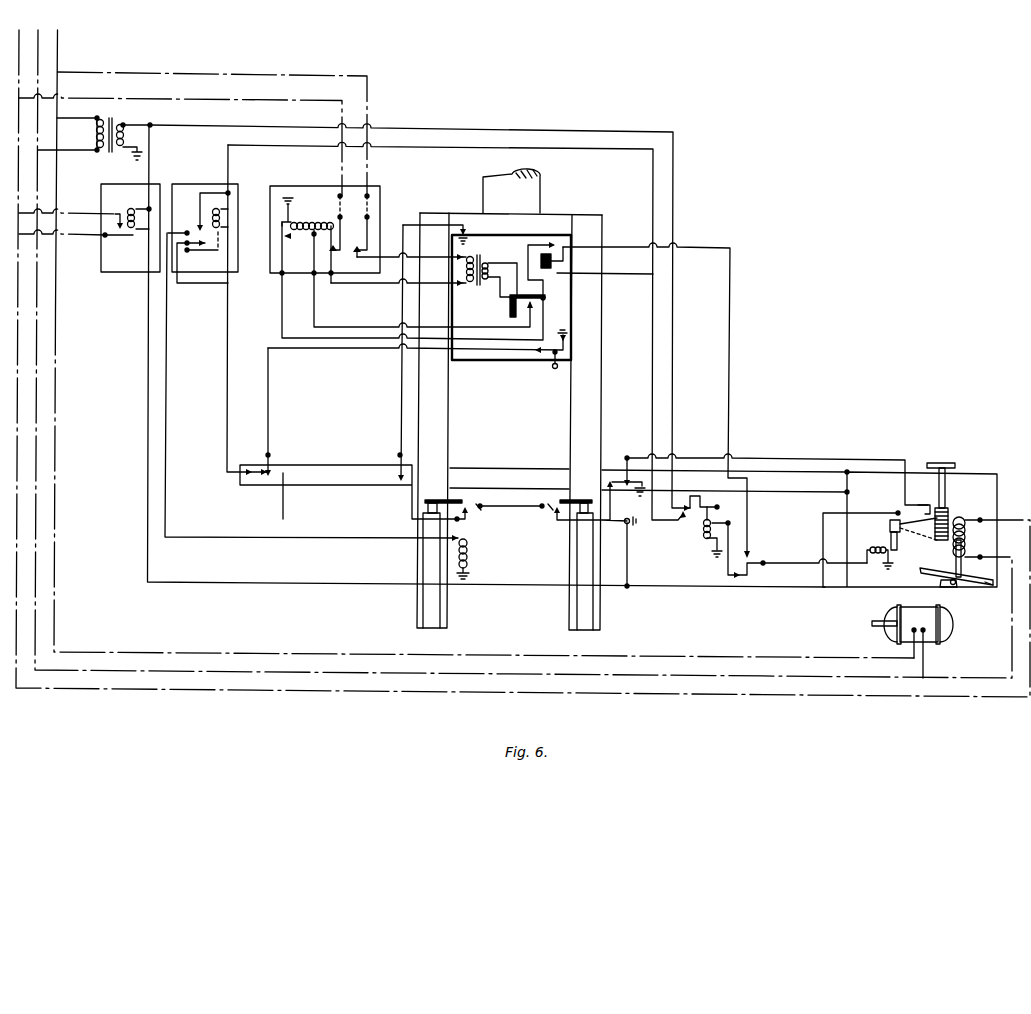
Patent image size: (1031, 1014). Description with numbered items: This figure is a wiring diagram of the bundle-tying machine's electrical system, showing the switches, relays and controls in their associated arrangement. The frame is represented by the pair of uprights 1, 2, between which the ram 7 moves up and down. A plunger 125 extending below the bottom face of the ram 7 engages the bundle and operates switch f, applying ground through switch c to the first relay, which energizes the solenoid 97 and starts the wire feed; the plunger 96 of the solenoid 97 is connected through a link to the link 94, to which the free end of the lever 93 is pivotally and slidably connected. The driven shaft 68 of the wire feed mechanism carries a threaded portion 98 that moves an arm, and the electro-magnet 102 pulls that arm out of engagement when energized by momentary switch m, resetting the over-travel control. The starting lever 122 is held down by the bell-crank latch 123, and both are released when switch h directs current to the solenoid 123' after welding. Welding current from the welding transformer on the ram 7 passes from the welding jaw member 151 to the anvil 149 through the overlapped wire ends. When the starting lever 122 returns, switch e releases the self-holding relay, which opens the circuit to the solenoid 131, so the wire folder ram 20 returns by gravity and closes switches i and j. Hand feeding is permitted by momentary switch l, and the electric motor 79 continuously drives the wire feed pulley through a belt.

The upright 1 is at (451, 442).
The upright 2 is at (570, 431).
The ram 7 is at (494, 361).
The wire folder ram 20 is at (423, 506).
The driven shaft 68 is at (946, 488).
The electric motor 79 is at (893, 633).
The lever 93 is at (945, 586).
The link 94 is at (982, 586).
The plunger 96 is at (956, 566).
The solenoid 97 is at (965, 542).
The threaded portion 98 is at (948, 512).
The electro-magnet 102 is at (877, 548).
The starting lever 122 is at (690, 497).
The latch 123 is at (718, 520).
The solenoid 123' is at (702, 556).
The plunger 125 is at (556, 369).
The solenoid 131 is at (468, 564).
The anvil 149 is at (510, 318).
The welding jaw member 151 is at (500, 298).